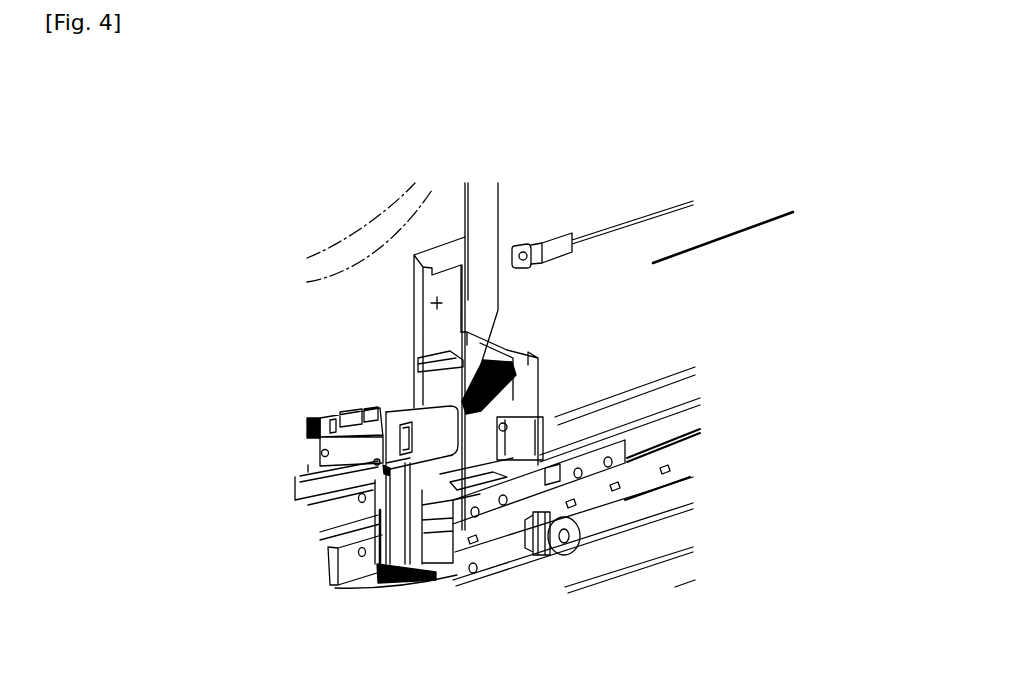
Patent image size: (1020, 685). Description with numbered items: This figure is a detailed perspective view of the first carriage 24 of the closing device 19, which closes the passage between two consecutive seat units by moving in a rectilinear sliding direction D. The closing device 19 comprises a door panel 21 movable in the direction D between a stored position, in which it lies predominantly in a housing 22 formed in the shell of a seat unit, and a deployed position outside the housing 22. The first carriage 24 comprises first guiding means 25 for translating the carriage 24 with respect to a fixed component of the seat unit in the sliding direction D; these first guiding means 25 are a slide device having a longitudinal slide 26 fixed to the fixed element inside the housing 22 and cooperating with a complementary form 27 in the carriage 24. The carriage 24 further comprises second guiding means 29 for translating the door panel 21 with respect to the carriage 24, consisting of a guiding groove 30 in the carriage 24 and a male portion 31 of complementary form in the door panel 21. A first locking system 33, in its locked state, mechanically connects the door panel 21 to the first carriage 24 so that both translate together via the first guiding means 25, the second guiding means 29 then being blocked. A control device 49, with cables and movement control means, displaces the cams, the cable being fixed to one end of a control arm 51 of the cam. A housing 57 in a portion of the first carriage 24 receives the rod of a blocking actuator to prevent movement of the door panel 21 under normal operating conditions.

The closing device 19 is at (329, 154).
The door panel 21 is at (508, 215).
The housing 22 is at (701, 413).
The first carriage 24 is at (378, 268).
The first guiding means 25 is at (405, 510).
The longitudinal slide 26 is at (642, 480).
The complementary form 27 is at (350, 540).
The second guiding means 29 is at (420, 339).
The guiding groove 30 is at (440, 303).
The male portion 31 is at (465, 277).
The first locking system 33 is at (447, 369).
The control device 49 is at (537, 308).
The control arm 51 is at (518, 391).
The housing 57 is at (320, 418).
The sliding direction D is at (755, 222).